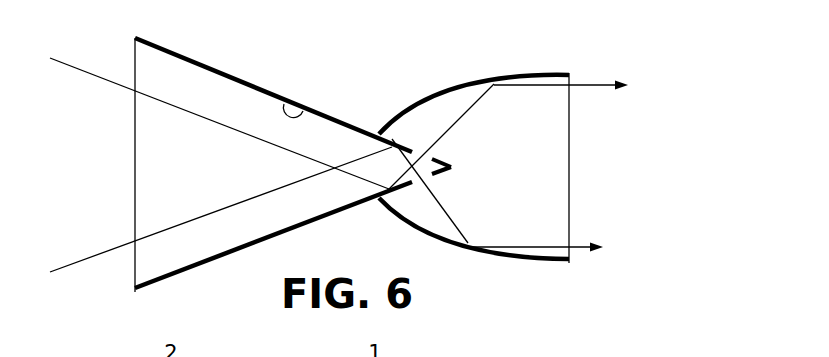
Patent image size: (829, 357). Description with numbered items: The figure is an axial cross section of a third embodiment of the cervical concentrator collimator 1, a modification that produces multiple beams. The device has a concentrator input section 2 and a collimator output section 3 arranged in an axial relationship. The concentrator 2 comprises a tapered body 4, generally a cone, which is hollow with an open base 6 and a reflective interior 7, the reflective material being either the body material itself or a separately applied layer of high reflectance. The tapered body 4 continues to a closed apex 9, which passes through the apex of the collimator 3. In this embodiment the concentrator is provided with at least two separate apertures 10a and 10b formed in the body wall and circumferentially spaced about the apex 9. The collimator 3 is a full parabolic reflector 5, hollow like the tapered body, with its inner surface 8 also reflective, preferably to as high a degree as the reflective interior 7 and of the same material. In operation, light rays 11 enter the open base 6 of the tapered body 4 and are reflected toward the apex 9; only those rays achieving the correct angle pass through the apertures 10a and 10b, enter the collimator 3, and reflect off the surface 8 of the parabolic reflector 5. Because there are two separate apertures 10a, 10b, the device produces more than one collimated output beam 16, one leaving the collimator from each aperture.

The cervical concentrator collimator 1 is at (366, 97).
The concentrator input section 2 is at (201, 57).
The collimator output section 3 is at (510, 67).
The tapered body 4 is at (247, 82).
The parabolic reflector 5 is at (449, 88).
The open base 6 is at (118, 265).
The reflective interior 7 is at (312, 107).
The inner surface 8 is at (550, 80).
The apex 9 is at (452, 167).
The aperture 10a is at (431, 152).
The aperture 10b is at (428, 180).
The light rays 11 is at (84, 260).
The output beam 16 is at (626, 101).